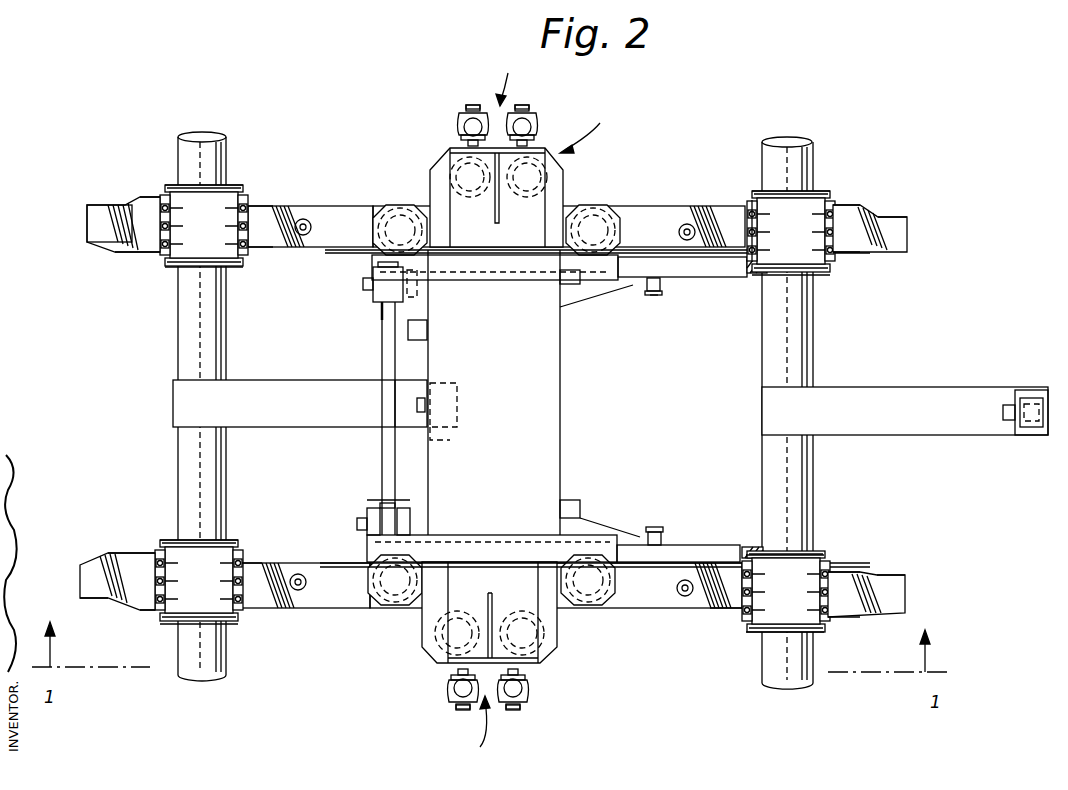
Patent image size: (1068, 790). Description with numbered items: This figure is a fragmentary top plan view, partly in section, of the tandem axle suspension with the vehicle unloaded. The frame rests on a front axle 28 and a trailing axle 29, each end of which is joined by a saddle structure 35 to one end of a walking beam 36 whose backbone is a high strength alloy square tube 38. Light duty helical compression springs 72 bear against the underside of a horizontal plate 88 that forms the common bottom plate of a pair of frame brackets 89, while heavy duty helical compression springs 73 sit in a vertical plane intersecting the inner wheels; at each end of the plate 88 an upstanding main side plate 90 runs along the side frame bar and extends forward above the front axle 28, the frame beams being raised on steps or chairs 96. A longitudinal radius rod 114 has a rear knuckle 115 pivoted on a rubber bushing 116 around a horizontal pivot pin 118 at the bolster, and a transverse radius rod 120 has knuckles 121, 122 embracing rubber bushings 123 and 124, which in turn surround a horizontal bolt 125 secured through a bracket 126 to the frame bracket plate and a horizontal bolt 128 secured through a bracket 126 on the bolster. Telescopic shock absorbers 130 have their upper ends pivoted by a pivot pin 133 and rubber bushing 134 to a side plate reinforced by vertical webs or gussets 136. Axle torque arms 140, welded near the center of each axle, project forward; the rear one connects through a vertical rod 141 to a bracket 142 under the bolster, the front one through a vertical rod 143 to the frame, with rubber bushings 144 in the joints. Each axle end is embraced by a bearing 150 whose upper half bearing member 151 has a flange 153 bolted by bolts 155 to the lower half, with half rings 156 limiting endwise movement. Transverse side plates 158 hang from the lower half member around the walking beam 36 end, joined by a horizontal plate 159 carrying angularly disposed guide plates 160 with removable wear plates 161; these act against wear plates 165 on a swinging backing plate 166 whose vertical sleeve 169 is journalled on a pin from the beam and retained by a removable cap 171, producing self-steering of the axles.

The front axle 28 is at (813, 366).
The trailing axle 29 is at (178, 366).
The saddle structure 35 is at (152, 185).
The walking beam 36 is at (326, 206).
The square tube 38 is at (676, 206).
The light duty helical compression springs 72 is at (395, 205).
The heavy duty helical compression springs 73 is at (435, 170).
The horizontal plate 88 is at (560, 410).
The frame bracket 89 is at (580, 132).
The main side plate 90 is at (862, 256).
The steps or chairs 96 is at (530, 280).
The radius rod 114 is at (752, 276).
The knuckle 115 is at (618, 298).
The rubber bushing 116 is at (660, 292).
The horizontal pivot pin 118 is at (653, 296).
The transverse radius rod 120 is at (382, 403).
The knuckle 121 is at (380, 506).
The knuckle 122 is at (380, 318).
The rubber bushing 123 is at (411, 522).
The rubber bushing 124 is at (403, 295).
The horizontal bolt 125 is at (357, 524).
The bracket 126 is at (417, 300).
The horizontal bolt 128 is at (363, 284).
The shock absorber 130 is at (478, 405).
The pivot pin 133 is at (462, 140).
The rubber bushing 134 is at (466, 110).
The vertical webs or gussets 136 is at (540, 236).
The axle torque arm 140 is at (275, 427).
The vertical rod 141 is at (452, 440).
The bracket 142 is at (395, 380).
The vertical rod 143 is at (1030, 435).
The rubber bushings 144 is at (460, 395).
The bearing 150 is at (195, 185).
The upper half bearing member 151 is at (780, 198).
The flange 153 is at (242, 560).
The bolts 155 is at (748, 215).
The half rings 156 is at (238, 185).
The transverse side plate 158 is at (145, 197).
The horizontal plate 159 is at (262, 206).
The guide plate 160 is at (133, 252).
The wear plates 161 is at (290, 247).
The wear plates 165 is at (905, 217).
The backing plate 166 is at (102, 215).
The vertical sleeve 169 is at (311, 227).
The removable cap 171 is at (679, 232).